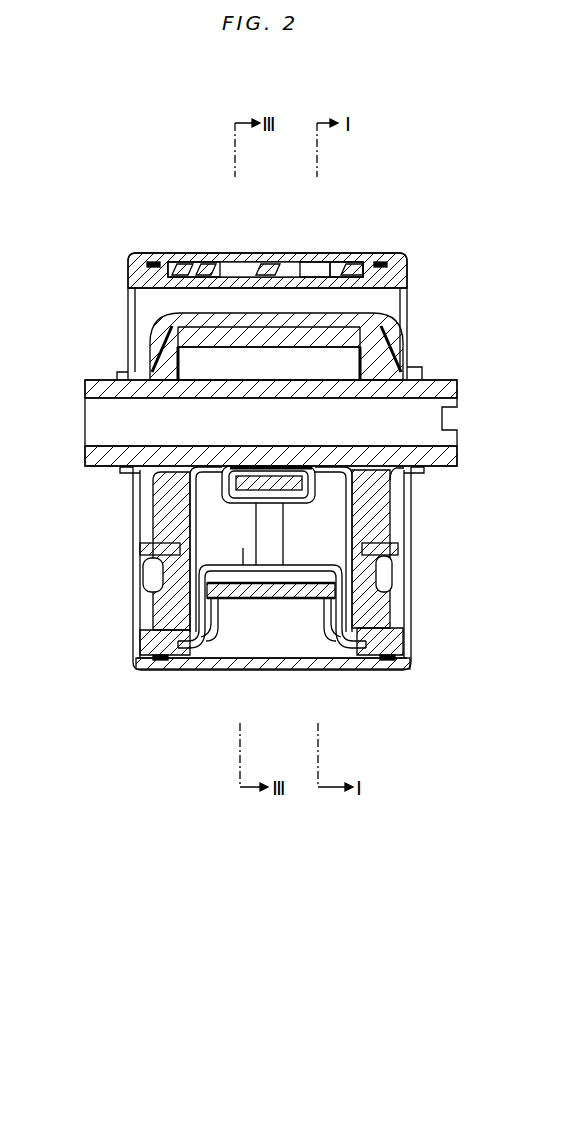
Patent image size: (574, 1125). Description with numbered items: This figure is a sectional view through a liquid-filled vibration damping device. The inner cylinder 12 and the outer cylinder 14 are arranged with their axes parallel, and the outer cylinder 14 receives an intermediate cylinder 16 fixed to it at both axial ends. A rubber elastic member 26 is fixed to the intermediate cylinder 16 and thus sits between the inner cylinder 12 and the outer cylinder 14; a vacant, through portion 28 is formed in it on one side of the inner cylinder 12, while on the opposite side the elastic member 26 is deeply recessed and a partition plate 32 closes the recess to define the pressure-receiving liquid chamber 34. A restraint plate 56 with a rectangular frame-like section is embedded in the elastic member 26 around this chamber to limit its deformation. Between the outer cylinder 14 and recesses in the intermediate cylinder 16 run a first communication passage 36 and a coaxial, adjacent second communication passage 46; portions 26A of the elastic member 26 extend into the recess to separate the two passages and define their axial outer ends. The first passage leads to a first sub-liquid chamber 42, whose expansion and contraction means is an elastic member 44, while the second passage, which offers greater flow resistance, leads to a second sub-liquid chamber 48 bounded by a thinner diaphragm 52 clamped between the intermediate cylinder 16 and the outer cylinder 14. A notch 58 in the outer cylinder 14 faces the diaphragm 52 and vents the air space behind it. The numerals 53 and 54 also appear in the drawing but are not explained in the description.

The inner cylinder 12 is at (437, 379).
The outer cylinder 14 is at (350, 259).
The intermediate cylinder 16 is at (392, 277).
The elastic member 26 is at (372, 507).
The portions of the elastic member 26A is at (190, 267).
The vacant, through portion 28 is at (299, 311).
The partition plate 32 is at (297, 565).
The pressure-receiving liquid chamber 34 is at (318, 535).
The first communication passage 36 is at (315, 263).
The first sub-liquid chamber 42 is at (252, 577).
The elastic member 44 is at (277, 595).
The second communication passage 46 is at (233, 267).
The second sub-liquid chamber 48 is at (330, 607).
The diaphragm 52 is at (220, 600).
The retaining clip 53 is at (290, 470).
The seal strip 54 is at (342, 468).
The restraint plate 56 is at (393, 547).
The notch 58 is at (277, 663).